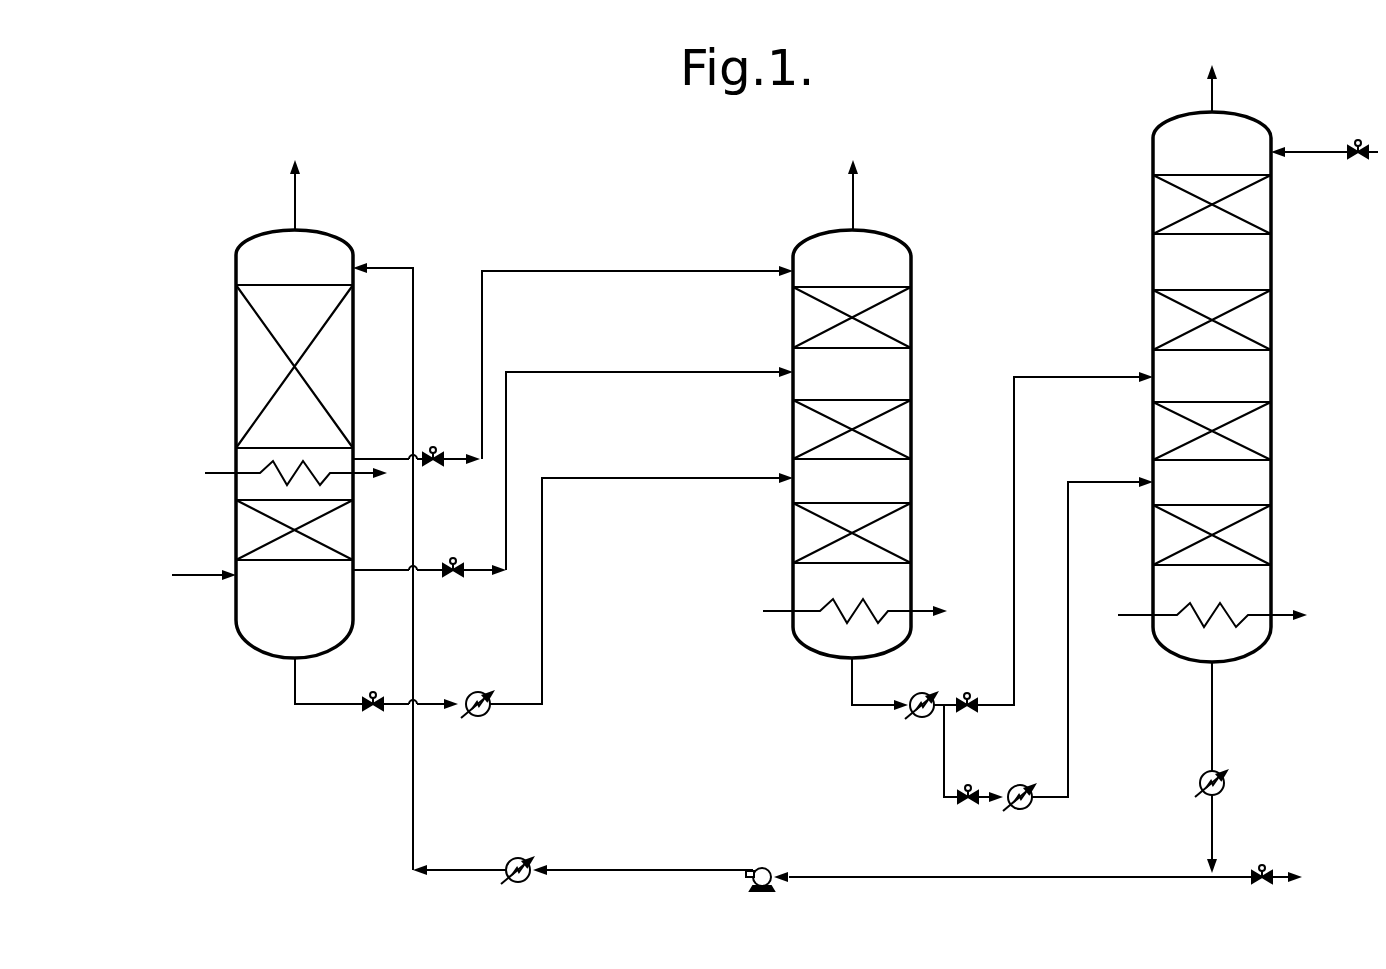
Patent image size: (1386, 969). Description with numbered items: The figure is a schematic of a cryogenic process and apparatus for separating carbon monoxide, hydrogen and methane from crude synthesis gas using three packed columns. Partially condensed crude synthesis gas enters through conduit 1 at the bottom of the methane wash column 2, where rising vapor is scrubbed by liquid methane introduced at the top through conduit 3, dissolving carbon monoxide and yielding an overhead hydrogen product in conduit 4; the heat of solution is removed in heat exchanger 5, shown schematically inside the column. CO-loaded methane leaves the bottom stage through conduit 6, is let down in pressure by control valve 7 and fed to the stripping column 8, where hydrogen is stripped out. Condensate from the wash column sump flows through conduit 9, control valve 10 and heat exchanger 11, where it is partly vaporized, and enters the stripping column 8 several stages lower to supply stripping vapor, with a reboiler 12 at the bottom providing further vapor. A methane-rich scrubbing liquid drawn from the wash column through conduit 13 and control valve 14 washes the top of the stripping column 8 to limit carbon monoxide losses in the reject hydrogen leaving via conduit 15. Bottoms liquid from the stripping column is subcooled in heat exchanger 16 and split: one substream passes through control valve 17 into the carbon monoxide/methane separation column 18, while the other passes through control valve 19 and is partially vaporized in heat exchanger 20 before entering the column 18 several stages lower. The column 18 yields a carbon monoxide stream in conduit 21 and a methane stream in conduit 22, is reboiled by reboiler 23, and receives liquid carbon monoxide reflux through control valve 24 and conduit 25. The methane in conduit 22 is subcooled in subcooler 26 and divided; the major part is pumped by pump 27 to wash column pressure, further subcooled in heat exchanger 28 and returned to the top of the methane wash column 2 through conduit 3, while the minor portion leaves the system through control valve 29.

The conduit 1 is at (190, 553).
The methane wash column 2 is at (236, 383).
The conduit 3 is at (375, 268).
The conduit 4 is at (297, 206).
The heat exchanger 5 is at (210, 449).
The conduit 6 is at (381, 568).
The control valve 7 is at (454, 560).
The stripping column 8 is at (911, 340).
The conduit 9 is at (313, 704).
The control valve 10 is at (388, 672).
The heat exchanger 11 is at (471, 692).
The reboiler 12 is at (761, 611).
The conduit 13 is at (381, 457).
The control valve 14 is at (446, 440).
The conduit 15 is at (855, 200).
The heat exchanger 16 is at (920, 692).
The control valve 17 is at (966, 692).
The carbon monoxide/methane separation column 18 is at (1271, 314).
The control valve 19 is at (968, 786).
The heat exchanger 20 is at (1010, 784).
The conduit 21 is at (1212, 100).
The conduit 22 is at (1212, 703).
The reboiler 23 is at (1118, 613).
The control valve 24 is at (1360, 143).
The conduit 25 is at (1308, 150).
The subcooler 26 is at (1200, 776).
The pump 27 is at (762, 868).
The heat exchanger 28 is at (515, 858).
The control valve 29 is at (1262, 865).